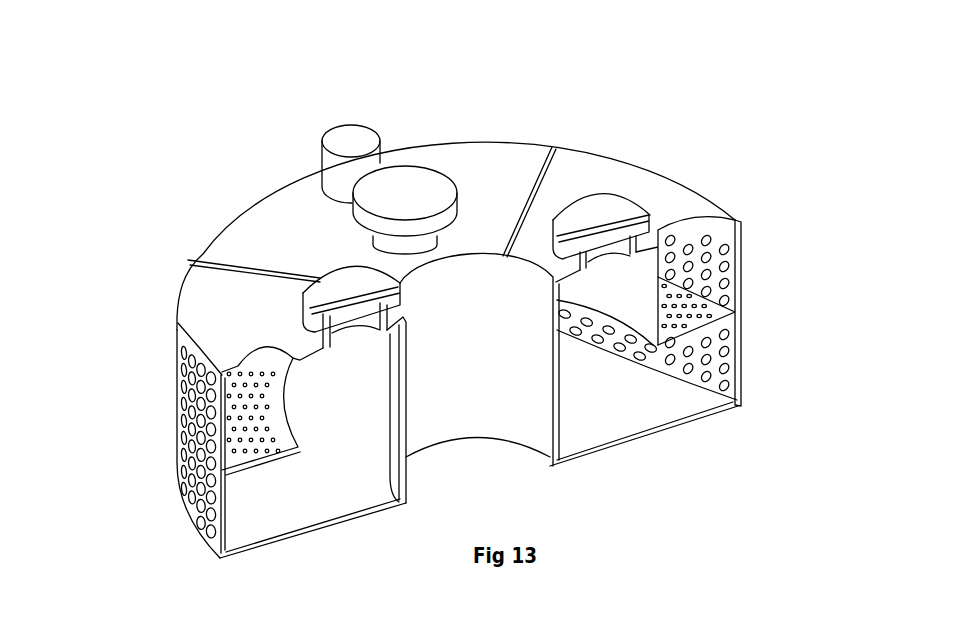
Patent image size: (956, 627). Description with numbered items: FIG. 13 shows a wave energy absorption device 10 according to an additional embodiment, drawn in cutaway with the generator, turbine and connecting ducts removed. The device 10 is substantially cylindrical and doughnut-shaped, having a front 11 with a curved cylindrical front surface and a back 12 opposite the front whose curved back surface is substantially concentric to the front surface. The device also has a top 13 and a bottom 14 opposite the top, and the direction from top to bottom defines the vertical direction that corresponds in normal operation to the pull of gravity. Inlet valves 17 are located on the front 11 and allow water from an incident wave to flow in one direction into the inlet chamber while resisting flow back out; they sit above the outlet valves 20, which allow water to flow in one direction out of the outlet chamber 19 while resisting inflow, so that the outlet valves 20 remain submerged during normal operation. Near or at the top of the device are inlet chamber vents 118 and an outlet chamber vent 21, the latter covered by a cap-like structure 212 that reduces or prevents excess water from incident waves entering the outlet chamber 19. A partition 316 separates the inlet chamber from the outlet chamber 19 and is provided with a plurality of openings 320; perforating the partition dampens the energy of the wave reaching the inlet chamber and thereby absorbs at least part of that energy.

The device 10 is at (598, 147).
The front 11 is at (132, 402).
The back 12 is at (542, 367).
The top 13 is at (358, 108).
The bottom 14 is at (387, 522).
The inlet valves 17 is at (737, 292).
The outlet chamber 19 is at (352, 425).
The outlet valves 20 is at (740, 374).
The outlet chamber vent 21 is at (615, 237).
The inlet chamber vents 118 is at (738, 236).
The cap-like structure 212 is at (593, 210).
The partition 316 is at (255, 462).
The openings 320 is at (220, 443).